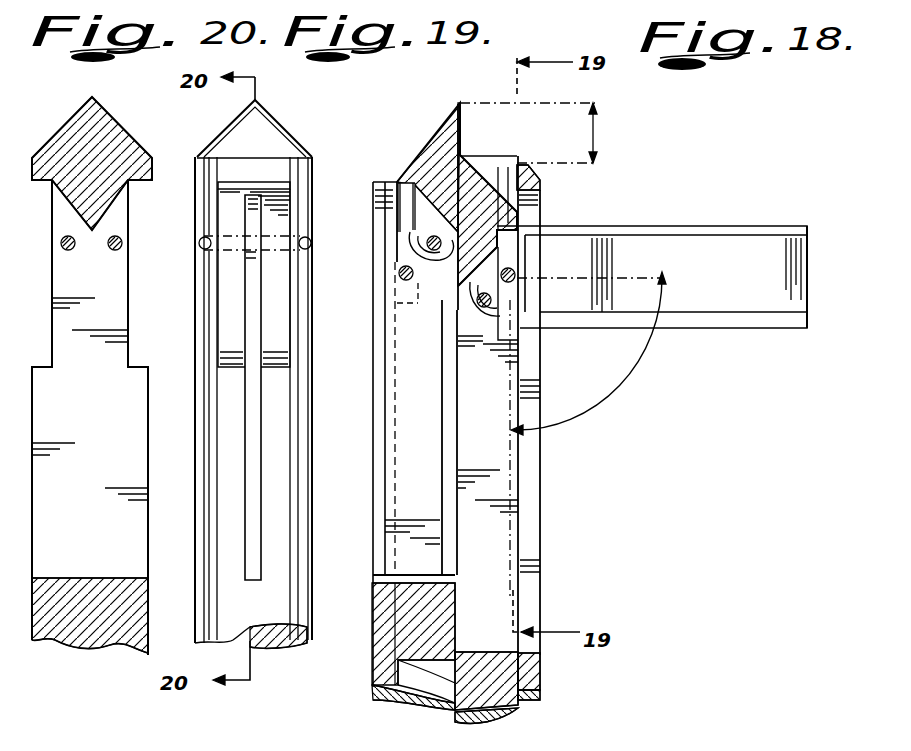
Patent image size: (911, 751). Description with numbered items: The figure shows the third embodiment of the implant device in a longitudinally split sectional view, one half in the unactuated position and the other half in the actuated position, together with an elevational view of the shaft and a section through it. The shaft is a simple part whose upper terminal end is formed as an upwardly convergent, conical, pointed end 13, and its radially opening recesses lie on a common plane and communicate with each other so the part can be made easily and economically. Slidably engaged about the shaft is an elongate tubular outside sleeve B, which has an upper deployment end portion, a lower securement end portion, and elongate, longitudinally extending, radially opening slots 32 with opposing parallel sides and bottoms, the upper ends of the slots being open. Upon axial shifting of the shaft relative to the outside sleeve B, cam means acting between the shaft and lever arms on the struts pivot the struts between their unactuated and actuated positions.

In FIG. 19, the pointed end 13 is at (263, 112).
In FIG. 18, the pointed end 13 is at (451, 112).
In FIG. 18, the slots 32 is at (393, 580).
In FIG. 18, the outside sleeve B is at (542, 677).